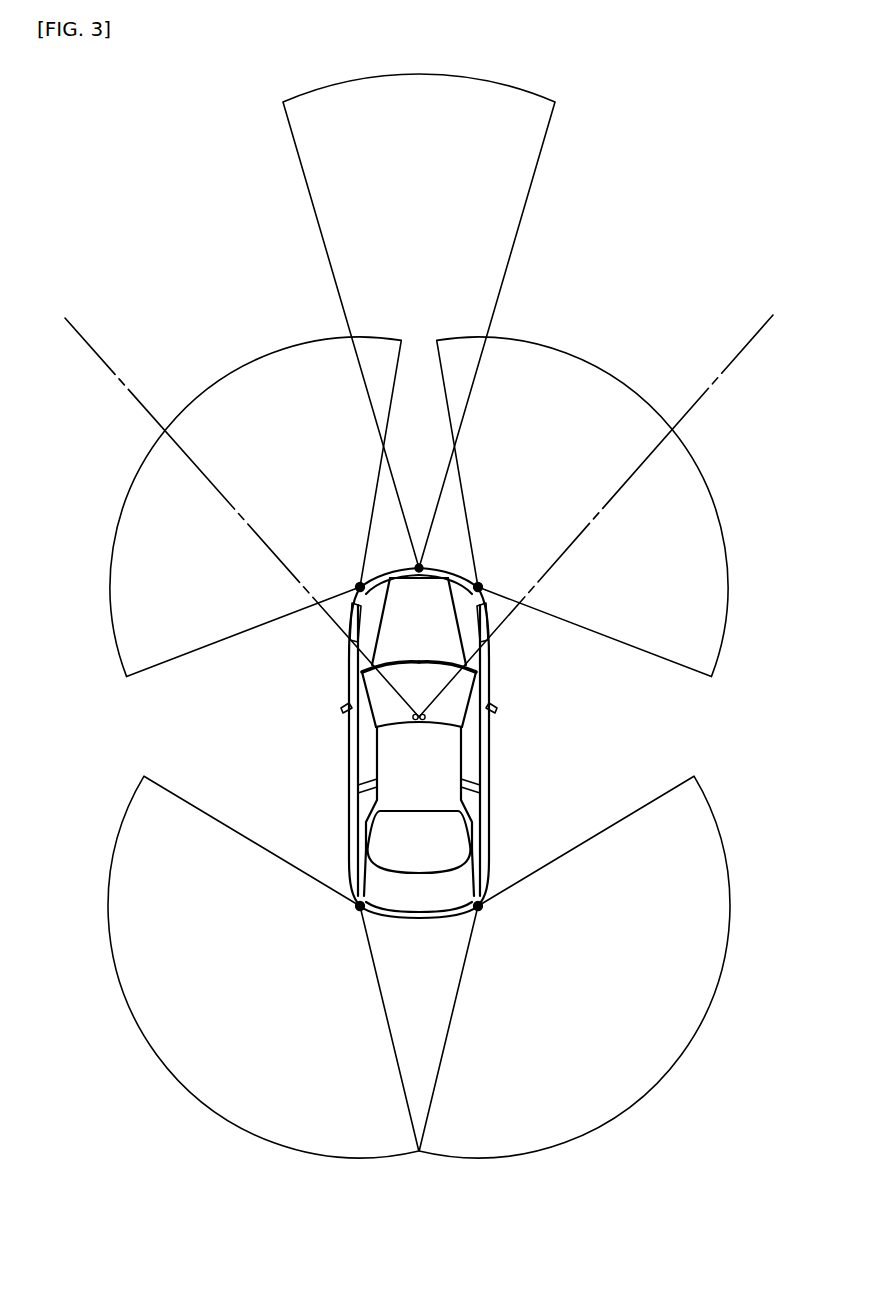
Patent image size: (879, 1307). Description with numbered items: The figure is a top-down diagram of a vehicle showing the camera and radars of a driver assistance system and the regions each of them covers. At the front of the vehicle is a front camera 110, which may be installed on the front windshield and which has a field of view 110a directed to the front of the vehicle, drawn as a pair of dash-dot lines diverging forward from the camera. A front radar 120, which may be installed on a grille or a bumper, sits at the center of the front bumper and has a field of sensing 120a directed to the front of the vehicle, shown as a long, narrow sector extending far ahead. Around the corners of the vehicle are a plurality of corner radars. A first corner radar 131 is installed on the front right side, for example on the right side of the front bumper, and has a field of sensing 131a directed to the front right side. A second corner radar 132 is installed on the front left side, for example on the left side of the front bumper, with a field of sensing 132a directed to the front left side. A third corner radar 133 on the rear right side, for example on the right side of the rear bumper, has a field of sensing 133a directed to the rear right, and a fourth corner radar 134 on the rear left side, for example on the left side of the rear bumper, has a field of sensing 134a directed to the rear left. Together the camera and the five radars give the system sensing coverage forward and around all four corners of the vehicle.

The front camera 110 is at (419, 724).
The field of view 110a is at (730, 361).
The front radar 120 is at (420, 567).
The field of sensing 120a is at (503, 208).
The first corner radar 131 is at (480, 586).
The field of sensing 131a is at (606, 386).
The second corner radar 132 is at (358, 586).
The field of sensing 132a is at (232, 387).
The third corner radar 133 is at (480, 907).
The field of sensing 133a is at (680, 1040).
The fourth corner radar 134 is at (360, 907).
The field of sensing 134a is at (158, 1040).